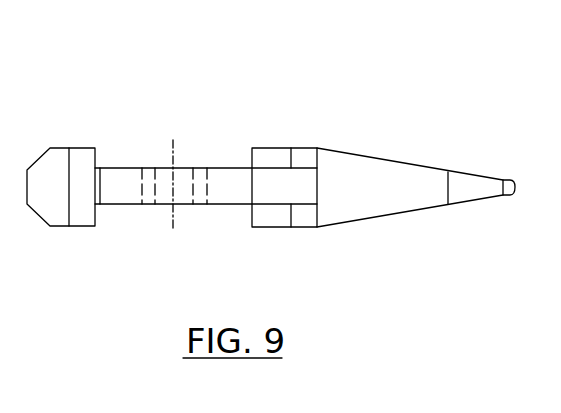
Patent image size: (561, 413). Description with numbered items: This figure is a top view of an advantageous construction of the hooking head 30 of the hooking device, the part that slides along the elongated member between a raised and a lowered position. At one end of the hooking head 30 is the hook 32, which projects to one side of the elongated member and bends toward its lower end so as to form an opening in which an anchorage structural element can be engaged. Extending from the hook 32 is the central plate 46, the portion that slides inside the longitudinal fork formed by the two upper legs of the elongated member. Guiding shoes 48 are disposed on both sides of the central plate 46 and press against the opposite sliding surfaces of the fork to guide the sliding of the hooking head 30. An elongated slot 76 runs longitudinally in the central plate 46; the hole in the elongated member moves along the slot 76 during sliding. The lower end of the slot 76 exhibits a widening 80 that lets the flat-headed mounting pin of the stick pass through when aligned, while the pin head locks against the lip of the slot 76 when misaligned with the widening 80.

The hooking head 30 is at (271, 211).
The hook 32 is at (380, 167).
The central plate 46 is at (115, 198).
The guiding shoes 48 is at (206, 188).
The elongated slot 76 is at (153, 198).
The widening 80 is at (207, 198).